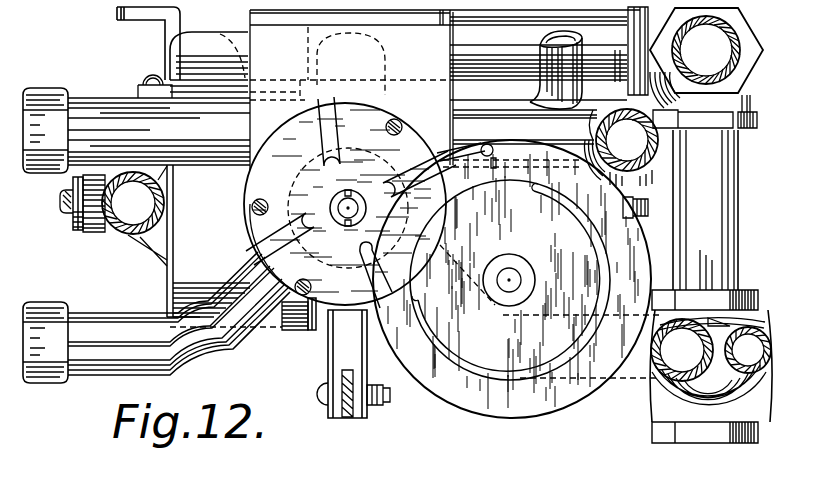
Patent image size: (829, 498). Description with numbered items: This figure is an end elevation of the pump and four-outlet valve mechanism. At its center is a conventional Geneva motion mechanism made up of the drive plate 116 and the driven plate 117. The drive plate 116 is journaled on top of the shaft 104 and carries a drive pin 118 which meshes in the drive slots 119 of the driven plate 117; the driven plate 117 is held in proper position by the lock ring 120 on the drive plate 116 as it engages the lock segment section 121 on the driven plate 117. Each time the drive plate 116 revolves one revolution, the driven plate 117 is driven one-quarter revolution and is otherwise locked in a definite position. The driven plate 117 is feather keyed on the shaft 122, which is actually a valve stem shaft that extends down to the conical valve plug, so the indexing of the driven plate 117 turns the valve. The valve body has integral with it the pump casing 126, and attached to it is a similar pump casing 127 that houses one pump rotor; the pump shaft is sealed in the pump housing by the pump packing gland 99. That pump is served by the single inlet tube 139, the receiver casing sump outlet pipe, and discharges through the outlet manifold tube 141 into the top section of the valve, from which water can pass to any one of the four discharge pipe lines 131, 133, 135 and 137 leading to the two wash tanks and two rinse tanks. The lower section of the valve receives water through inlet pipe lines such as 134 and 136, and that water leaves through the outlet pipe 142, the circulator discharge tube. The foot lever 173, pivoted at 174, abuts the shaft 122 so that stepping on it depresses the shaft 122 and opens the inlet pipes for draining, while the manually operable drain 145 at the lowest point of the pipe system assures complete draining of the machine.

The pump packing gland 99 is at (80, 232).
The shaft 104 is at (511, 277).
The drive plate 116 is at (556, 406).
The driven plate 117 is at (254, 222).
The drive pin 118 is at (490, 145).
The drive slots 119 is at (424, 199).
The lock ring 120 is at (415, 313).
The lock segment section 121 is at (304, 330).
The shaft 122 is at (338, 207).
The pump casing 126 is at (283, 330).
The pump casing 127 is at (168, 284).
The discharge pipe line 131 is at (88, 374).
The discharge pipe line 133 is at (634, 377).
The inlet pipe line 134 is at (771, 375).
The discharge pipe line 135 is at (624, 166).
The inlet pipe line 136 is at (540, 46).
The discharge pipe line 137 is at (68, 73).
The inlet tube 139 is at (150, 214).
The outlet manifold tube 141 is at (172, 49).
The outlet pipe 142 is at (250, 16).
The manually operable drain 145 is at (687, 441).
The foot lever 173 is at (343, 422).
The pivot 174 is at (378, 407).